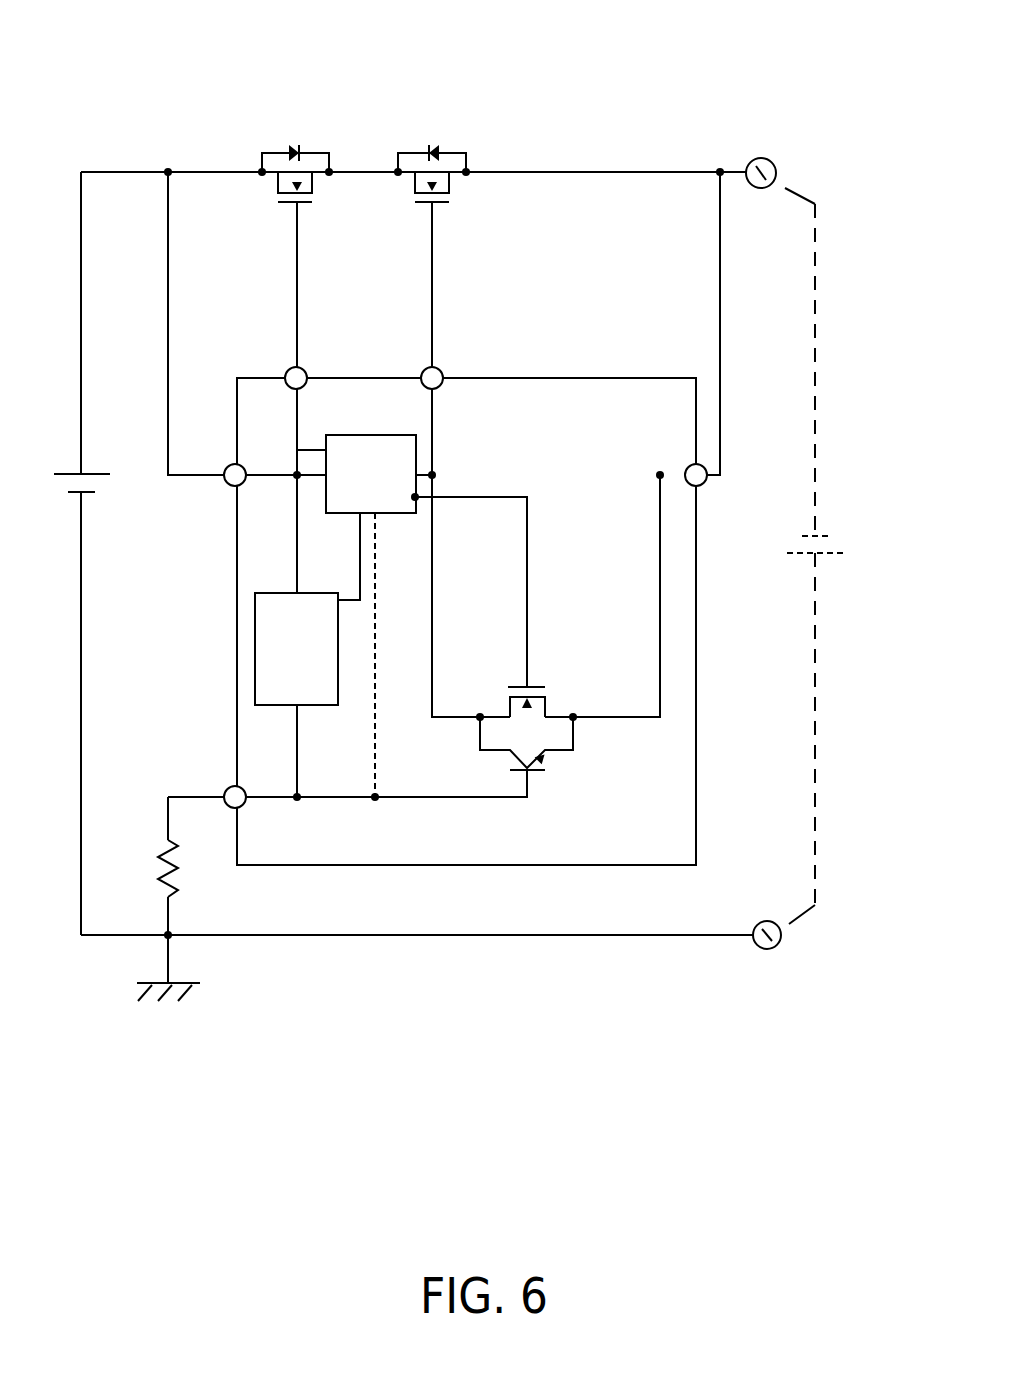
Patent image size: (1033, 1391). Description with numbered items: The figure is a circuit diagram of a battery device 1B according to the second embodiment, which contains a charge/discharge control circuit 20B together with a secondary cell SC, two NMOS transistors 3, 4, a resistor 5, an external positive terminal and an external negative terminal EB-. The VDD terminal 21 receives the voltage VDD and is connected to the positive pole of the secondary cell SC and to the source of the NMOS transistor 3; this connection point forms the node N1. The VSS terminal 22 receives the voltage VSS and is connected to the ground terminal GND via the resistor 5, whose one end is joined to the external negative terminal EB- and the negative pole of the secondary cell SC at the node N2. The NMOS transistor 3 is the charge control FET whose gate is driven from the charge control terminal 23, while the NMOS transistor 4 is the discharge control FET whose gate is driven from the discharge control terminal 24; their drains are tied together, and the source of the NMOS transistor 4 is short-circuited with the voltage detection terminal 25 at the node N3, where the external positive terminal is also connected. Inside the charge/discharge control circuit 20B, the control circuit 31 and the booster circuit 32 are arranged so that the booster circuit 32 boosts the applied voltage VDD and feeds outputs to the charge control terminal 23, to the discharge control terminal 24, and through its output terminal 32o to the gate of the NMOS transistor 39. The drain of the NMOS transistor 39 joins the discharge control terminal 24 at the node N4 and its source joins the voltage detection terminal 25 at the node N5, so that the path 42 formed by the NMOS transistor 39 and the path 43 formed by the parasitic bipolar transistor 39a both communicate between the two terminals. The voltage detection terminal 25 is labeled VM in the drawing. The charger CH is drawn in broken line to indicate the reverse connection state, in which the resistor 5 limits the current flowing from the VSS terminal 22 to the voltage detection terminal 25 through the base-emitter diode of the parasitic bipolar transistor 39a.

The battery device 1B is at (665, 40).
The NMOS transistor 3 is at (310, 205).
The NMOS transistor 4 is at (447, 205).
The resistor 5 is at (160, 857).
The charge/discharge control circuit 20B is at (548, 372).
The VDD terminal 21 is at (228, 466).
The VSS terminal 22 is at (229, 788).
The charge control terminal 23 is at (289, 369).
The discharge control terminal 24 is at (424, 369).
The voltage detection terminal 25 is at (715, 500).
The control circuit 31 is at (318, 707).
The booster circuit 32 is at (370, 435).
The output terminal 32o is at (416, 515).
The NMOS transistor 39 is at (548, 700).
The parasitic bipolar transistor 39a is at (530, 772).
The path 42 is at (614, 720).
The path 43 is at (478, 735).
The node N1 is at (165, 171).
The node N2 is at (165, 933).
The node N3 is at (717, 170).
The node N4 is at (436, 473).
The node N5 is at (656, 473).
The secondary cell SC is at (96, 474).
The charger CH is at (795, 560).
The external negative terminal EB- is at (766, 949).
The voltage VDD is at (265, 502).
The voltage VSS is at (267, 825).
The VM terminal label VM is at (676, 450).
The ground terminal GND is at (165, 1025).